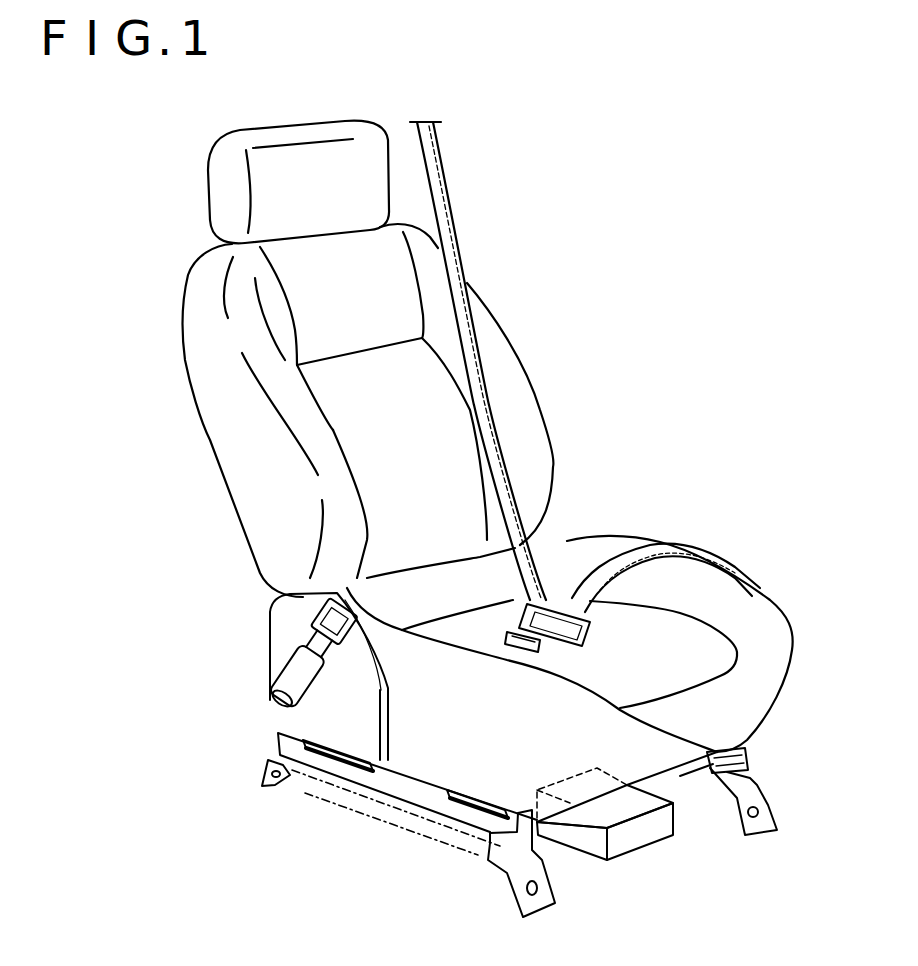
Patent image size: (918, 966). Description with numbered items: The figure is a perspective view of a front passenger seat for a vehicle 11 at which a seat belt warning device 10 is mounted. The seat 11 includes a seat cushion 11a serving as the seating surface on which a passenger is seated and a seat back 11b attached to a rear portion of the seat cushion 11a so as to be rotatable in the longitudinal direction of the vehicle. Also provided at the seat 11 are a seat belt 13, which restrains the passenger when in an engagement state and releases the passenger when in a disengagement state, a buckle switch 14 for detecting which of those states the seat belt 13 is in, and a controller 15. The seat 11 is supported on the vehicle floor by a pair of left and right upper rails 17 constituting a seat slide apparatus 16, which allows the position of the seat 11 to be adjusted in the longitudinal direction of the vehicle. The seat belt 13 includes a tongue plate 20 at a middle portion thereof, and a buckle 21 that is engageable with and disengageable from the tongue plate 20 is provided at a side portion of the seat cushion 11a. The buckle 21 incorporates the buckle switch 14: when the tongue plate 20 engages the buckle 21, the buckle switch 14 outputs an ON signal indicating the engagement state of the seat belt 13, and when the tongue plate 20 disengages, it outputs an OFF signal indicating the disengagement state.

The seat belt warning device 10 is at (625, 385).
The seat 11 is at (621, 533).
The seat cushion 11a is at (760, 608).
The seat back 11b is at (233, 437).
The seat belt 13 is at (447, 190).
The buckle switch 14 is at (313, 627).
The controller 15 is at (640, 840).
The seat slide apparatus 16 is at (374, 817).
The upper rails 17 is at (422, 797).
The tongue plate 20 is at (612, 615).
The buckle 21 is at (307, 595).